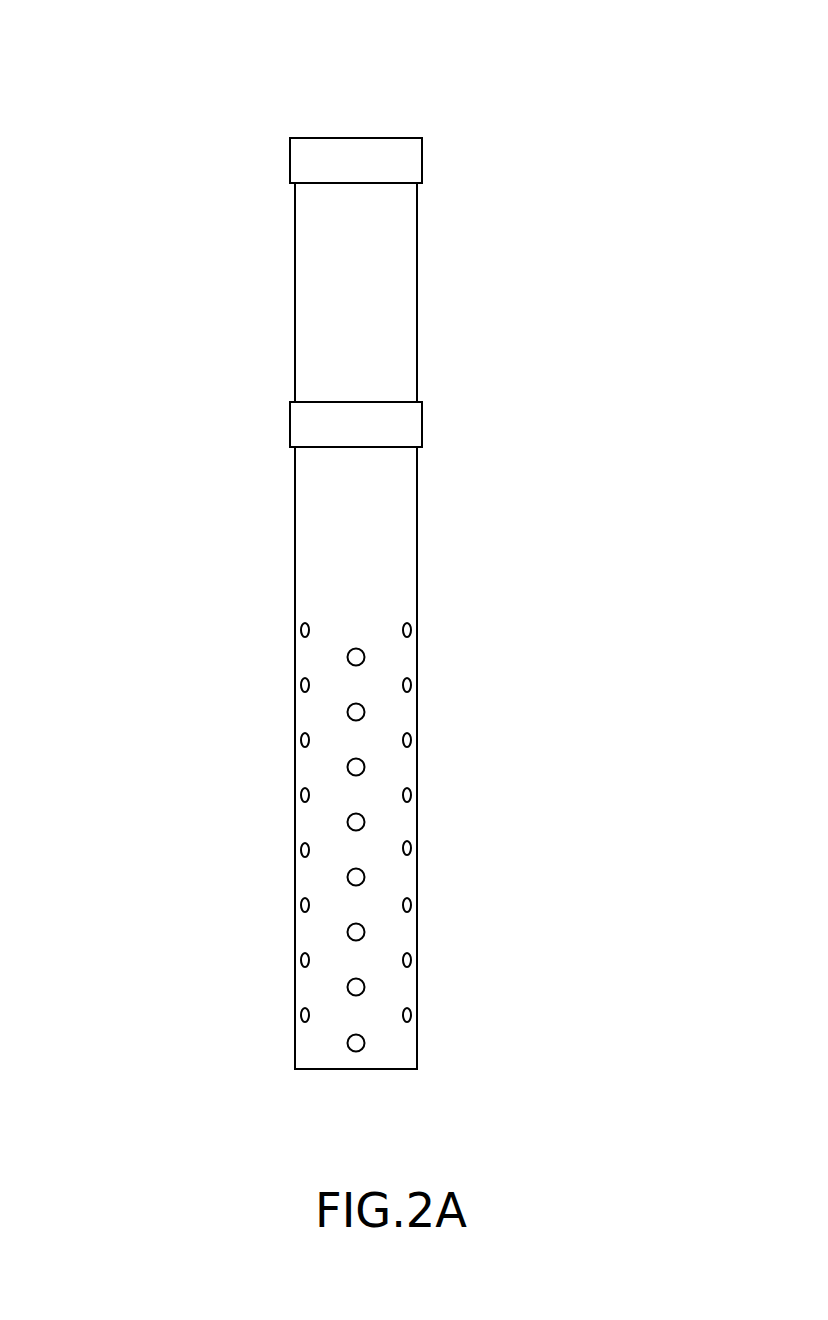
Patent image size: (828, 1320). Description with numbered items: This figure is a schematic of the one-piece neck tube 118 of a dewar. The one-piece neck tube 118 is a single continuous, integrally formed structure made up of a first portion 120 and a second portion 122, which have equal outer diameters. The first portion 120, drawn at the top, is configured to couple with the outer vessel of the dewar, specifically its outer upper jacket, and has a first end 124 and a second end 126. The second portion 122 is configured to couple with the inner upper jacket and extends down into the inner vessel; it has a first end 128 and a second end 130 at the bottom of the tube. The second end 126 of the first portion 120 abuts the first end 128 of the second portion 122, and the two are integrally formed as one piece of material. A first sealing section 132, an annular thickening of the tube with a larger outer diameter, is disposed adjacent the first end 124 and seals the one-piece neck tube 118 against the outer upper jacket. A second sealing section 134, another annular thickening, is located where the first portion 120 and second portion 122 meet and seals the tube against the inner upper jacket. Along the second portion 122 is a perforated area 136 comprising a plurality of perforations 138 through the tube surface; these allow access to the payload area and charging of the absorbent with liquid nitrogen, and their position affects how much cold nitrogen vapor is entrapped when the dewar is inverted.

The one-piece neck tube 118 is at (183, 85).
The first portion 120 is at (459, 235).
The second portion 122 is at (452, 487).
The first end 124 is at (433, 112).
The second end 126 is at (443, 393).
The first end 128 is at (447, 429).
The second end 130 is at (468, 1064).
The first sealing section 132 is at (305, 163).
The second sealing section 134 is at (303, 420).
The perforated area 136 is at (574, 633).
The perforations 138 is at (411, 847).